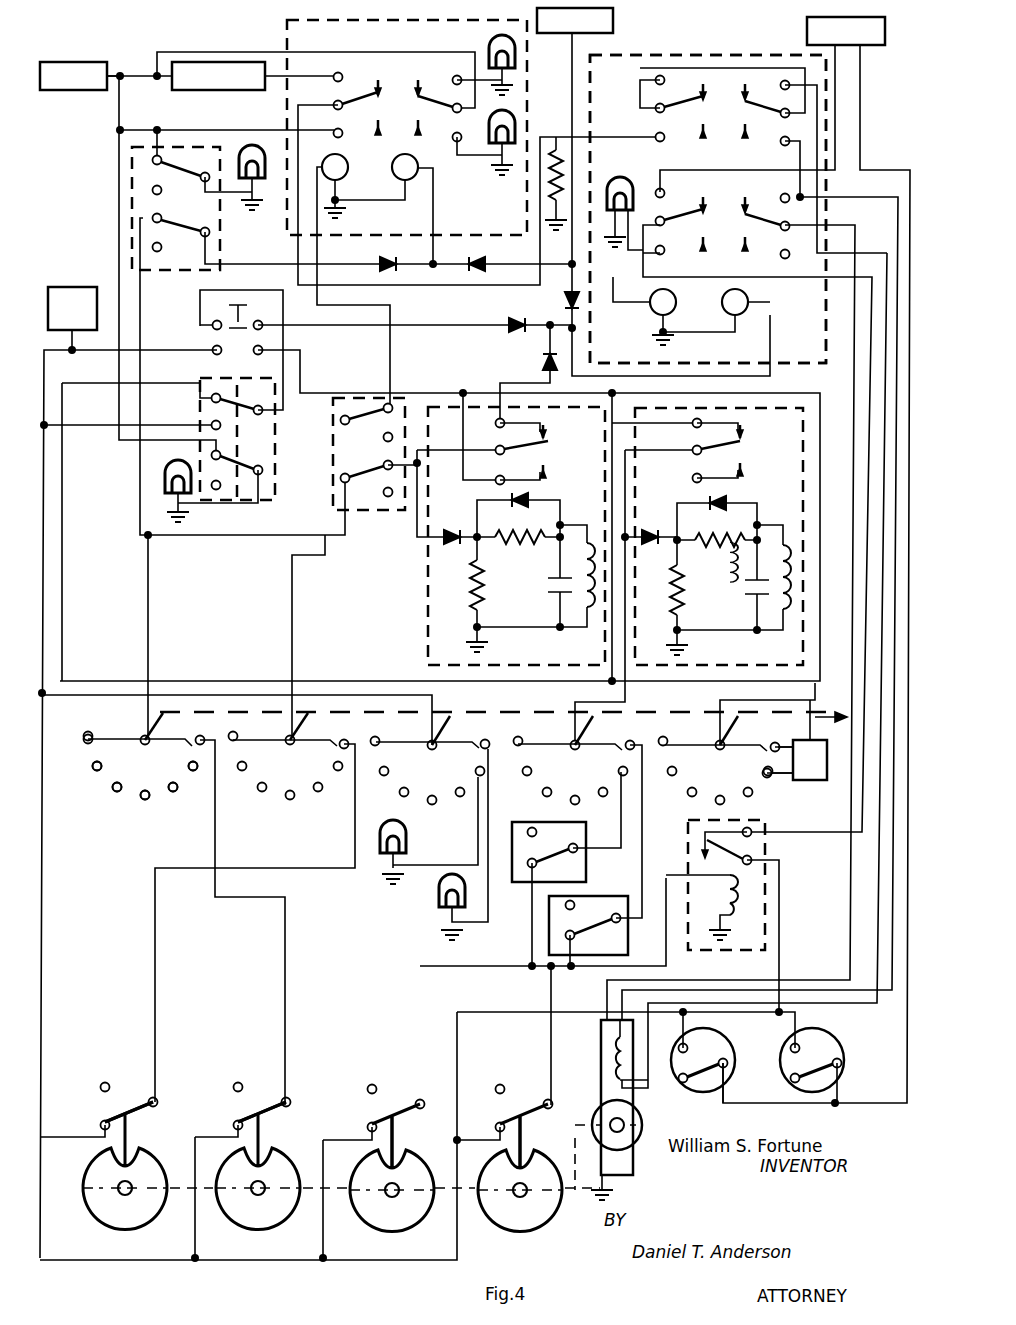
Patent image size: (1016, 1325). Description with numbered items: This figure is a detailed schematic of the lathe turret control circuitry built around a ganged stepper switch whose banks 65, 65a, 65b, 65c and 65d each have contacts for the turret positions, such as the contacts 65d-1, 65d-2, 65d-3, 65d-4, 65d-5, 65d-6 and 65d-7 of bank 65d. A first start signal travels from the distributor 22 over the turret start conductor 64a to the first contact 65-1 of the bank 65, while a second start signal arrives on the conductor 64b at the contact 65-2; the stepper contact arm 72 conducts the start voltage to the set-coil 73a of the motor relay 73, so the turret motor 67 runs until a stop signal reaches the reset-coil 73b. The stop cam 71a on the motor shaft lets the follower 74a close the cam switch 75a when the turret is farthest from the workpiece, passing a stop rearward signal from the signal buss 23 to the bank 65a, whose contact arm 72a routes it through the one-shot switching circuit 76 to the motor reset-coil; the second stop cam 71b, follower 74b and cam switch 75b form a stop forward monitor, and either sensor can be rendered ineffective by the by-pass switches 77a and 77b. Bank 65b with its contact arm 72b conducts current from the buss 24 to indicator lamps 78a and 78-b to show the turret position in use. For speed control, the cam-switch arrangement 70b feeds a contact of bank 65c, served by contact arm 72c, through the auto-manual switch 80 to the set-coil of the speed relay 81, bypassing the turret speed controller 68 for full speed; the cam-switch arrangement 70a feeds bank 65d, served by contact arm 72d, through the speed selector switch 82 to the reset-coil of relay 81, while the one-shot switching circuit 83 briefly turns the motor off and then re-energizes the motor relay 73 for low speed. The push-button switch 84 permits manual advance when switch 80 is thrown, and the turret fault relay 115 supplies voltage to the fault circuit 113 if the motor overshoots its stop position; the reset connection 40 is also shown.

The buss 24 is at (108, 73).
The turret speed controller 68 is at (247, 29).
The speed selector switch 82 is at (191, 285).
The speed relay 81 is at (504, 232).
The reset circuit 40 is at (603, 36).
The fault circuit 113 is at (807, 30).
The motor relay 73 is at (812, 318).
The set-coil 73a is at (650, 292).
The reset-coil 73b is at (722, 310).
The push-button switch 84 is at (199, 343).
The signal buss 23 is at (93, 336).
The auto-manual switch 80 is at (330, 442).
The one-shot switching circuit 83 is at (427, 560).
The one-shot switching circuit 76 is at (800, 430).
The stepper contact arm 72 is at (706, 720).
The stepper contact arm 72a is at (553, 727).
The stepper contact arm 72b is at (490, 706).
The stepper contact arm 72c is at (307, 742).
The stepper contact arm 72d is at (168, 742).
The stepper switch bank 65 is at (732, 780).
The stepper bank 65a is at (593, 778).
The stepper bank 65b is at (448, 778).
The stepper bank 65c is at (307, 778).
The stepper bank 65d is at (165, 778).
The stepper bank contact 65d-1 is at (206, 745).
The stepper bank contact 65d-2 is at (193, 771).
The stepper bank contact 65d-3 is at (170, 792).
The stepper bank contact 65d-4 is at (144, 800).
The stepper bank contact 65d-5 is at (117, 792).
The stepper bank contact 65d-6 is at (92, 767).
The stepper bank contact 65d-7 is at (84, 738).
The first contact 65-1 is at (783, 736).
The contact 65-2 is at (767, 779).
The distributor 22 is at (810, 760).
The turret start conductor 64a is at (789, 753).
The turret start conductor 64b is at (785, 775).
The lamp 78-b is at (410, 845).
The lamp 78a is at (437, 897).
The by-pass switch 77a is at (626, 950).
The by-pass switch 77b is at (580, 880).
The turret fault relay 115 is at (765, 932).
The cam-switch arrangement 70a is at (295, 1127).
The cam-switch arrangement 70b is at (164, 1124).
The cam 71a is at (521, 1231).
The second stop cam 71b is at (394, 1231).
The cam switch 75a is at (528, 1097).
The cam switch 75b is at (398, 1097).
The follower 74a is at (522, 1142).
The follower 74b is at (394, 1142).
The turret actuator or motor 67 is at (641, 1160).